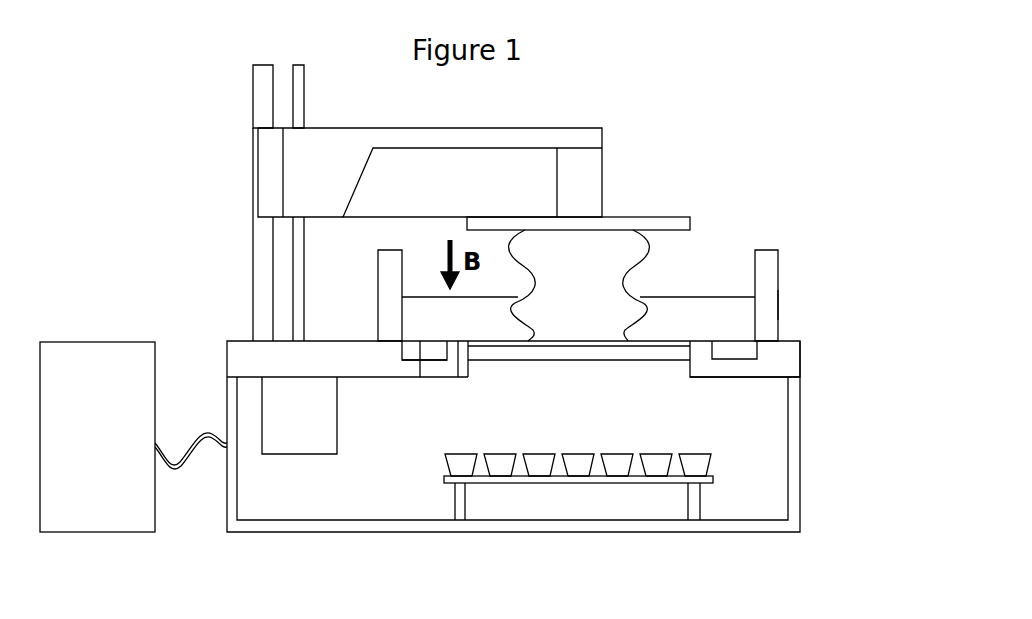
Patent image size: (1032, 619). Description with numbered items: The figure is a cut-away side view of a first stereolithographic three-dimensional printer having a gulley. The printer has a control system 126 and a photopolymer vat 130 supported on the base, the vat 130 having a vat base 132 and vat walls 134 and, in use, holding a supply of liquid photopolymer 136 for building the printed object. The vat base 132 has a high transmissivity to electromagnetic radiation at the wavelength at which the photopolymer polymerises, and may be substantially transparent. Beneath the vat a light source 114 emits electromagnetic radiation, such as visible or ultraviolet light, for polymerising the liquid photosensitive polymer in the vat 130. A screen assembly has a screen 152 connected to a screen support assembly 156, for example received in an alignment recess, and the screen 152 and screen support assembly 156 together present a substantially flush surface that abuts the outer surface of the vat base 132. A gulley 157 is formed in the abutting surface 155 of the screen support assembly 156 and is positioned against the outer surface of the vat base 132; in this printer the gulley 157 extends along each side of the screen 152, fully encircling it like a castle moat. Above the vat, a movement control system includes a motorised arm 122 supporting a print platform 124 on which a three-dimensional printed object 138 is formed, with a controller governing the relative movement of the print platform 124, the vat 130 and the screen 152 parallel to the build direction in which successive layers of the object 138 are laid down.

The light source 114 is at (657, 465).
The motorised arm 122 is at (418, 128).
The print platform 124 is at (632, 217).
The control system 126 is at (97, 437).
The photopolymer vat 130 is at (778, 250).
The vat base 132 is at (667, 341).
The vat walls 134 is at (778, 305).
The liquid photopolymer 136 is at (422, 321).
The 3D printed object 138 is at (579, 285).
The screen 152 is at (690, 361).
The abutting surface 155 is at (458, 377).
The screen support assembly 156 is at (377, 362).
The gulley 157 is at (420, 377).